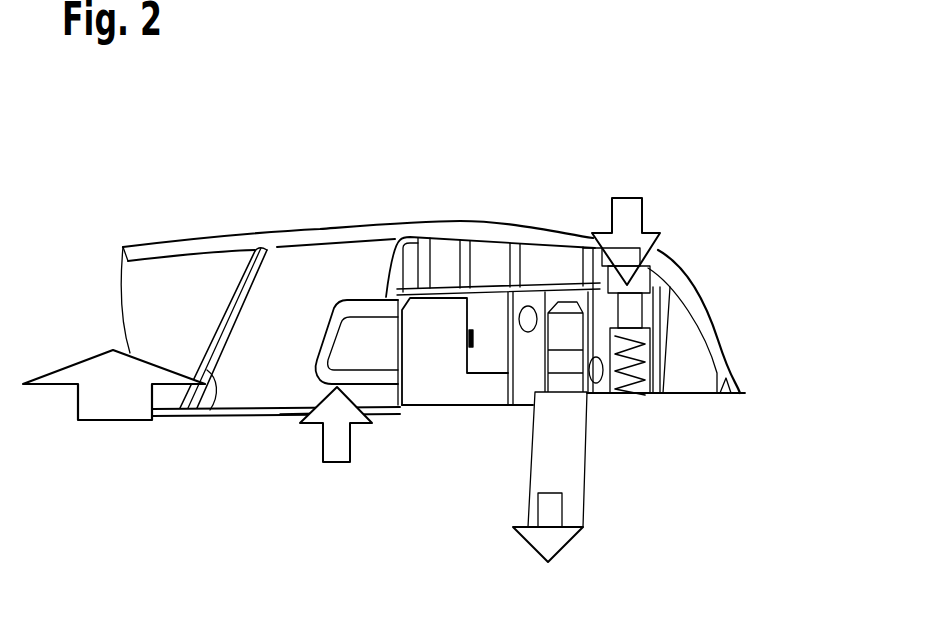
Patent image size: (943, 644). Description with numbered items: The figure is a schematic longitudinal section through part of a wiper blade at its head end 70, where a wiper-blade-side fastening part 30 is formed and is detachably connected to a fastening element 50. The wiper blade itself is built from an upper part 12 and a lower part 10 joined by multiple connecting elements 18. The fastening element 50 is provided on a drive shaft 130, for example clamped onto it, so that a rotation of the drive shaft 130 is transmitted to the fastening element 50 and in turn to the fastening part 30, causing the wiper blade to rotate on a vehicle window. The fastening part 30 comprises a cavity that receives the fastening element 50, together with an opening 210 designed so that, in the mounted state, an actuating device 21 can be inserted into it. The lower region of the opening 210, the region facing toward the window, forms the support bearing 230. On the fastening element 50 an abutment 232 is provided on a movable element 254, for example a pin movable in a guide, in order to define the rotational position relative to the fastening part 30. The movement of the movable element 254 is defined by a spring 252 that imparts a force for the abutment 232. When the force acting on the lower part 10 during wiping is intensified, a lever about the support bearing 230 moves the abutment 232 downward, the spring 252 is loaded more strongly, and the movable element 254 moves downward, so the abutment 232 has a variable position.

The lower part 10 is at (168, 413).
The upper part 12 is at (180, 248).
The connecting elements 18 is at (213, 373).
The actuating device 21 is at (312, 322).
The opening 210 is at (347, 290).
The support bearing 230 is at (293, 415).
The fastening part 30 is at (507, 230).
The fastening element 50 is at (443, 385).
The head end 70 is at (691, 232).
The drive shaft 130 is at (573, 478).
The abutment 232 is at (637, 278).
The spring 252 is at (630, 397).
The movable element 254 is at (637, 338).